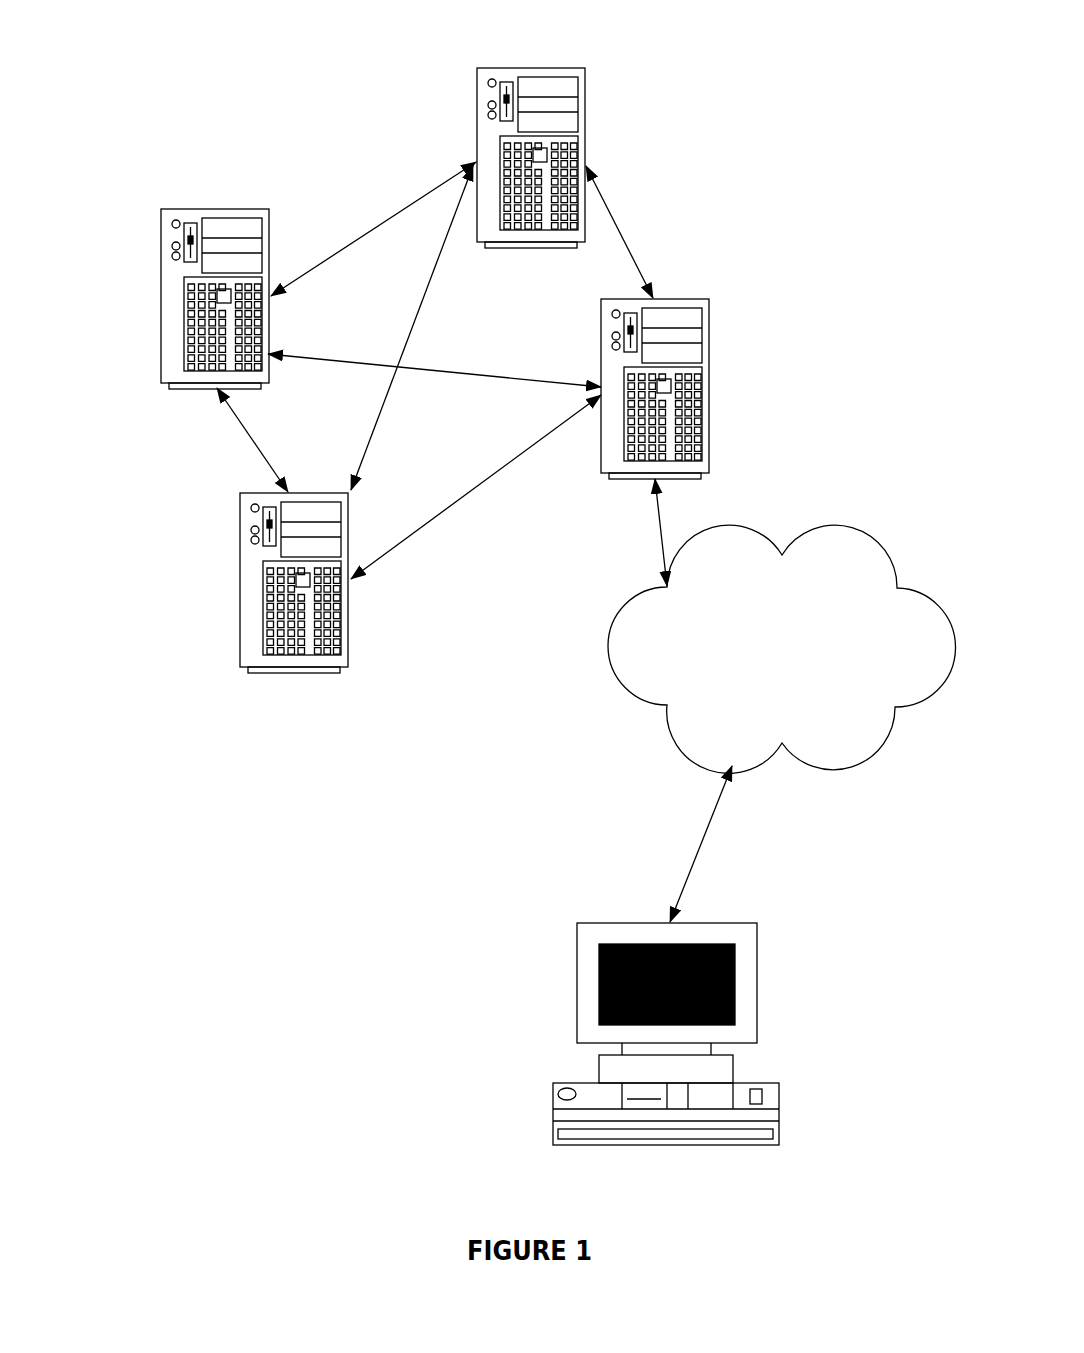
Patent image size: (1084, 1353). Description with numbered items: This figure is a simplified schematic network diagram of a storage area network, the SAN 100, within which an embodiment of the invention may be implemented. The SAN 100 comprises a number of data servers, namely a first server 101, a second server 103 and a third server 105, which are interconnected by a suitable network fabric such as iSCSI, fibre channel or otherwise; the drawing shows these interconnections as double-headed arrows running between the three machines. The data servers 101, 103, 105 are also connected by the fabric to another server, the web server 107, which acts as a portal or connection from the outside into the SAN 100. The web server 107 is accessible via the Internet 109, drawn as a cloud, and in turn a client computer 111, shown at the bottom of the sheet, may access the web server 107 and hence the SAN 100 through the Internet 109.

The SAN 100 is at (197, 747).
The first server 101 is at (242, 553).
The second server 103 is at (160, 327).
The third server 105 is at (587, 72).
The web server 107 is at (703, 298).
The Internet 109 is at (755, 530).
The client computer 111 is at (718, 919).